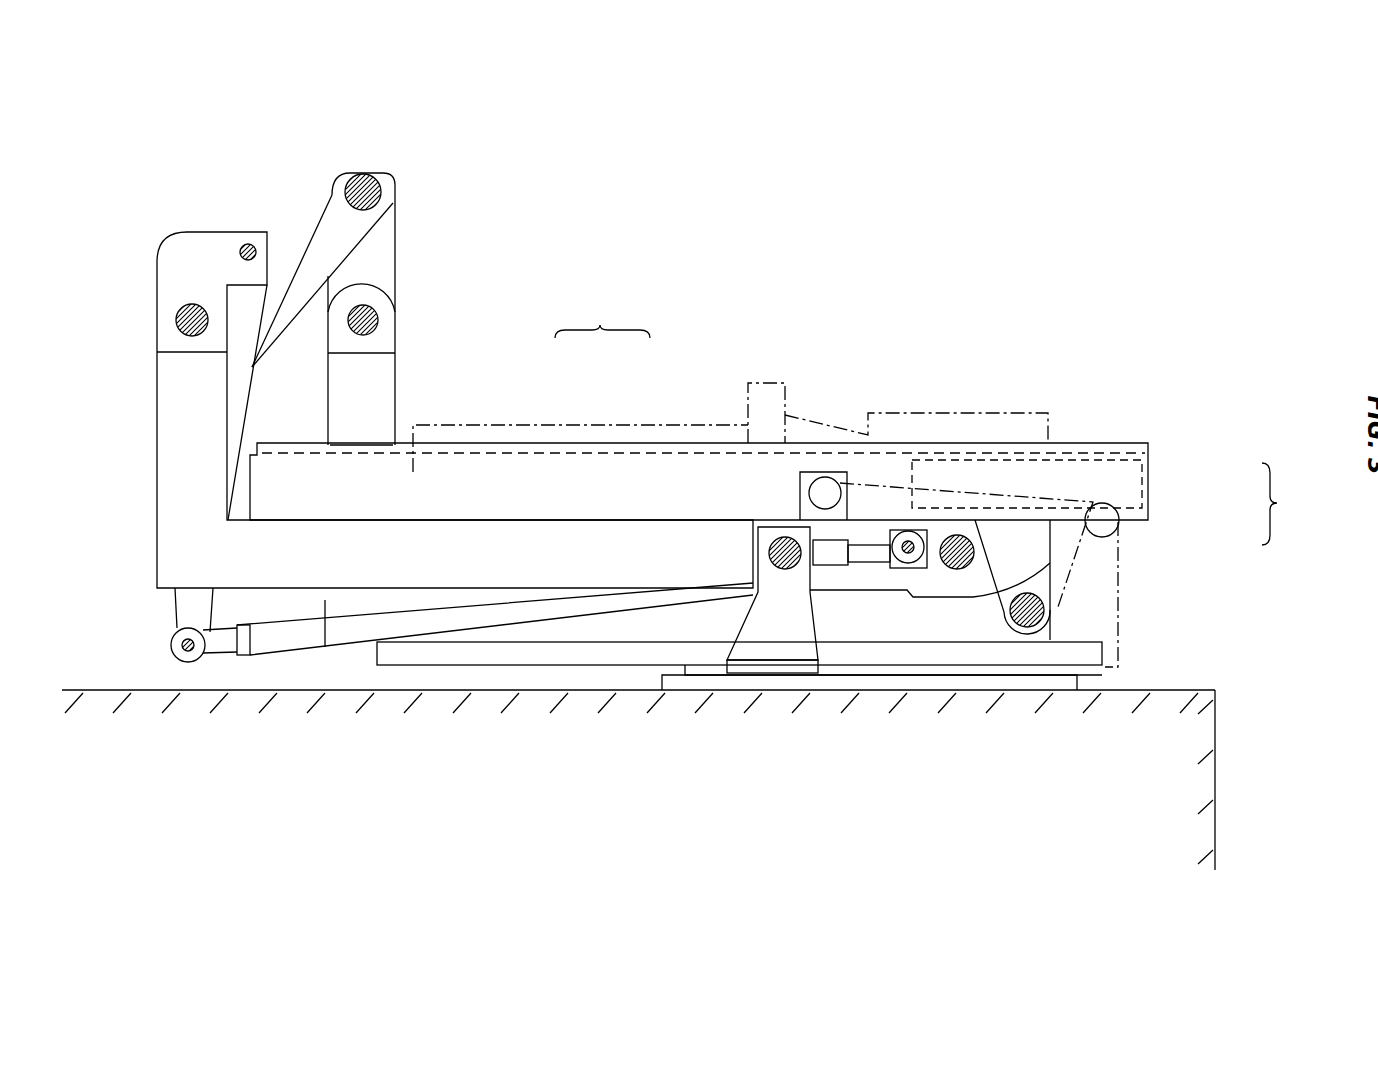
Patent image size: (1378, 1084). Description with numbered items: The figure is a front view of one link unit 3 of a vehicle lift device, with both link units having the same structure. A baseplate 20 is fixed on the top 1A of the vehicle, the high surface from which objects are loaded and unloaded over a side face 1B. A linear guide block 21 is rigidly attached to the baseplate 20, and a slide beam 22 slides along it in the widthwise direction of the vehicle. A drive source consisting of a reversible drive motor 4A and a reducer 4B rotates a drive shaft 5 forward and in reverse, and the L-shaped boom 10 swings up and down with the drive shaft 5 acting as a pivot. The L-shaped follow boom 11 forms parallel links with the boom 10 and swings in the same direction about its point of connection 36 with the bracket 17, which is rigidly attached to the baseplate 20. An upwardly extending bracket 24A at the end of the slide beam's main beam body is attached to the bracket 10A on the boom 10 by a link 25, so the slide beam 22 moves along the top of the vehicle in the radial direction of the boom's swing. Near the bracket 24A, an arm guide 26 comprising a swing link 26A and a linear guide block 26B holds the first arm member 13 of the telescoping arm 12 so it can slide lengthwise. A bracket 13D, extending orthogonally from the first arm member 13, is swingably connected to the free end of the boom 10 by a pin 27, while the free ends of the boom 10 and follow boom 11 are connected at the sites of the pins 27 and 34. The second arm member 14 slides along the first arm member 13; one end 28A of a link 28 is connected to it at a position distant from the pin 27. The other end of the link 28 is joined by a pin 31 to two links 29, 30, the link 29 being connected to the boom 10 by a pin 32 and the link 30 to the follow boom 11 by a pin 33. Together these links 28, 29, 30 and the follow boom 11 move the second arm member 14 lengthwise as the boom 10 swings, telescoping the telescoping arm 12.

The top of the vehicle 1A is at (1188, 690).
The side face of the vehicle 1B is at (1215, 820).
The link unit 3 is at (558, 252).
The drive motor 4A is at (762, 383).
The reducer 4B is at (970, 413).
The drive shaft 5 is at (968, 530).
The boom 10 is at (396, 228).
The bracket 10A is at (837, 473).
The follow boom 11 is at (157, 490).
The telescoping arm 12 is at (602, 318).
The first arm member 13 is at (638, 453).
The bracket 13D is at (397, 387).
The second arm member 14 is at (557, 445).
The bracket 17 is at (770, 660).
The baseplate 20 is at (1030, 692).
The linear guide block 21 is at (878, 677).
The slide beam 22 is at (608, 660).
The bracket 24A is at (1120, 592).
The link 25 is at (1043, 498).
The arm guide 26 is at (1285, 504).
The swing link 26A is at (1052, 565).
The linear guide block 26B is at (1150, 478).
The pin 27 is at (378, 318).
The link 28 is at (325, 647).
The end of link 28A is at (907, 587).
The link 29 is at (312, 230).
The link 30 is at (175, 617).
The pin 31 is at (186, 651).
The pin 32 is at (368, 178).
The pin 33 is at (248, 244).
The pin 34 is at (175, 320).
The point of connection 36 is at (790, 530).